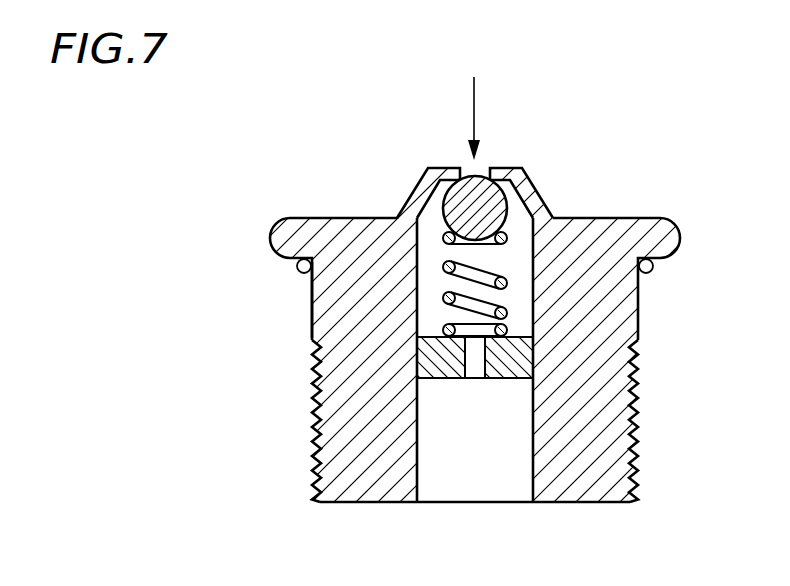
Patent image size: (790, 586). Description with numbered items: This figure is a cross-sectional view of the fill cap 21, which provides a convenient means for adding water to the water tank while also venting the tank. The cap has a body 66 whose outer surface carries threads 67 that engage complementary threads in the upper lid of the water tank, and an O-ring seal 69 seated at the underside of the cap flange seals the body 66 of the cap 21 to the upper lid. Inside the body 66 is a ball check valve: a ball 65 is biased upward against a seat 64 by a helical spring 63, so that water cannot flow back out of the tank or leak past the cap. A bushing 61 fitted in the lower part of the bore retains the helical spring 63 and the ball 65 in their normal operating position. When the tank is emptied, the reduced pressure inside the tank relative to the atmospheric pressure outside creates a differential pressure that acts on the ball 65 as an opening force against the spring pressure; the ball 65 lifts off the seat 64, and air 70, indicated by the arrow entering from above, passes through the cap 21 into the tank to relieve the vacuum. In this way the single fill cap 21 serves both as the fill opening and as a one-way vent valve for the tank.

The fill cap 21 is at (395, 295).
The bushing 61 is at (510, 380).
The helical spring 63 is at (503, 307).
The seat 64 is at (462, 172).
The ball 65 is at (482, 168).
The body 66 is at (313, 308).
The threads 67 is at (637, 425).
The O-ring seal 69 is at (654, 266).
The air 70 is at (476, 88).